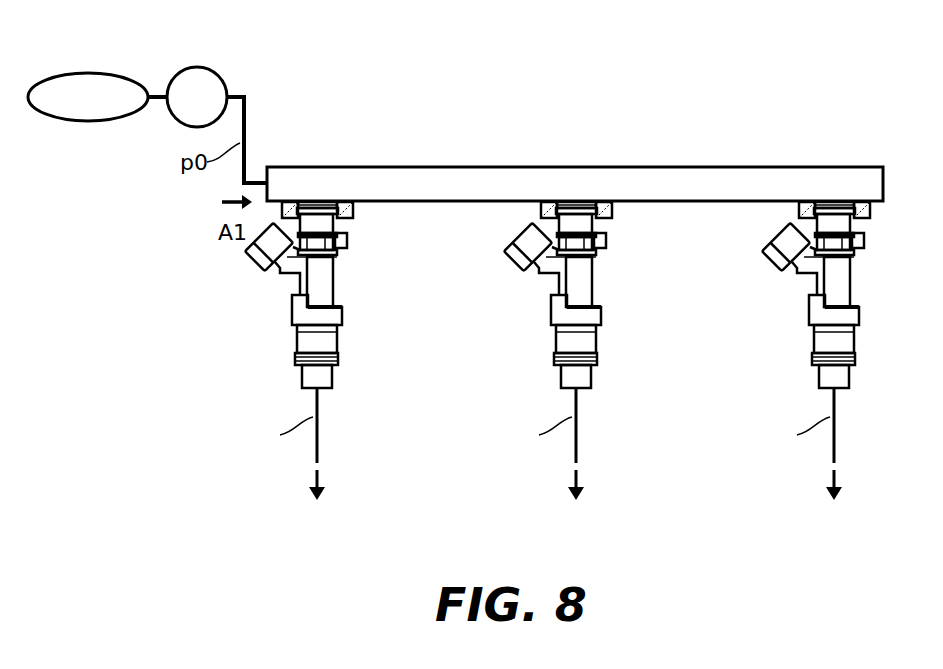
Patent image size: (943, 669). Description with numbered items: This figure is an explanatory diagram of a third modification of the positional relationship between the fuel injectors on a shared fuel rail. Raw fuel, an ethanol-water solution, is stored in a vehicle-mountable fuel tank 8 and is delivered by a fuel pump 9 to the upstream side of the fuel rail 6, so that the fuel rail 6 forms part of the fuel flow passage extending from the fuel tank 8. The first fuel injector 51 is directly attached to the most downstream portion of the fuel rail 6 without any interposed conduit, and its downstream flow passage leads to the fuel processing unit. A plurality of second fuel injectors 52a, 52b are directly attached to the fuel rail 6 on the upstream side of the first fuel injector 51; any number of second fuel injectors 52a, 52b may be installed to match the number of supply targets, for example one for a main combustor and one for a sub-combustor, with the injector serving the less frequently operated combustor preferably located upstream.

The fuel tank 8 is at (78, 72).
The fuel pump 9 is at (190, 68).
The fuel rail 6 is at (330, 166).
The first fuel injector 51 is at (859, 315).
The second fuel injector 52a is at (342, 315).
The second fuel injector 52b is at (601, 315).